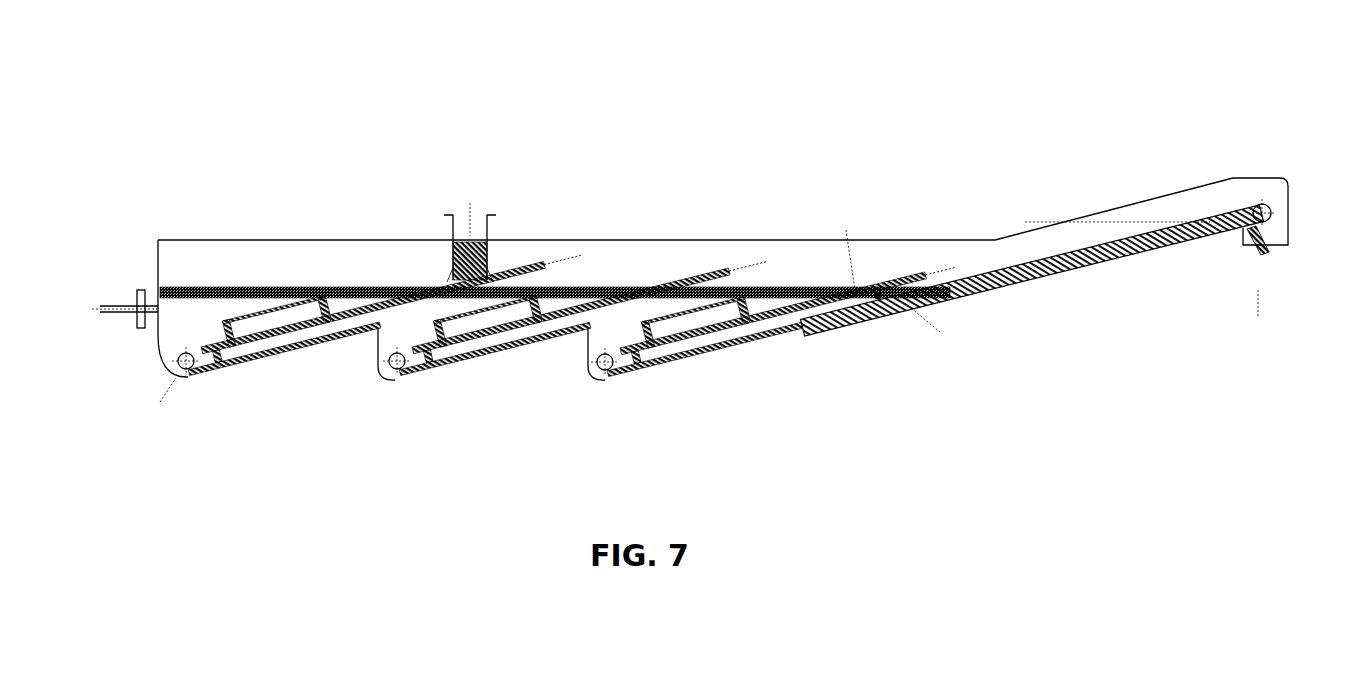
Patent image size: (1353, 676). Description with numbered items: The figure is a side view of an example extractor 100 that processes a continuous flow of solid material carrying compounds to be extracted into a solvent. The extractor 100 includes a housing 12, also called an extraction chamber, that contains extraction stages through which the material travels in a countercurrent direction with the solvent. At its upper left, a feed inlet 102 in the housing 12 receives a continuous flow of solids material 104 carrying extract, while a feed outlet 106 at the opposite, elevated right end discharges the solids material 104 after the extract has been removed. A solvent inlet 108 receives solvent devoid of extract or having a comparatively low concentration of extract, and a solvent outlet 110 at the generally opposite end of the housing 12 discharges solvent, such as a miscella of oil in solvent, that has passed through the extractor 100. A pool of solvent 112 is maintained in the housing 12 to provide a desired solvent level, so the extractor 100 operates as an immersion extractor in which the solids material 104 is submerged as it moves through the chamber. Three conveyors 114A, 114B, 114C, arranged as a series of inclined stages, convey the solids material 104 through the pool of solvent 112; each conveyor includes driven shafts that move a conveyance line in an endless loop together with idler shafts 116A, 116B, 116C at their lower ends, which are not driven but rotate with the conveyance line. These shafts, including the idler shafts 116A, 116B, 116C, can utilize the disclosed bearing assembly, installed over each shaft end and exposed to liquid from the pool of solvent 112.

The extractor 100 is at (140, 119).
The housing 12 is at (158, 264).
The pool of solvent 112 is at (178, 288).
The solids material 104 is at (452, 271).
The feed inlet 102 is at (495, 190).
The solvent inlet 108 is at (879, 294).
The feed outlet 106 is at (1281, 312).
The solvent outlet 110 is at (133, 317).
The first conveyor 114A is at (243, 364).
The second conveyor 114B is at (470, 346).
The third conveyor 114C is at (697, 341).
The idler shaft 116A is at (190, 369).
The idler shaft 116B is at (400, 369).
The idler shaft 116C is at (610, 369).